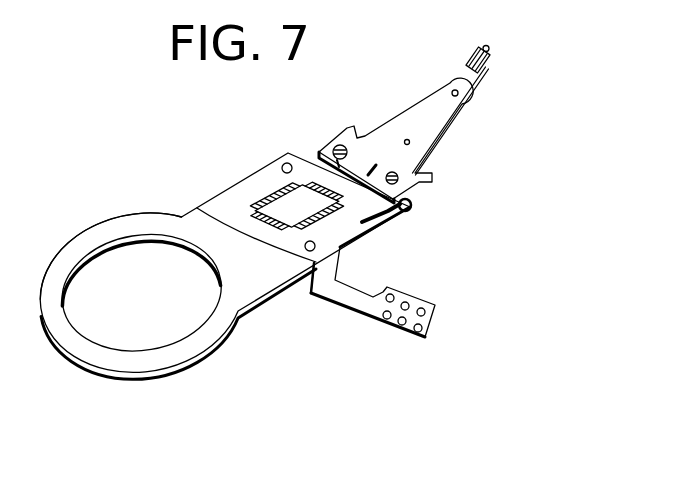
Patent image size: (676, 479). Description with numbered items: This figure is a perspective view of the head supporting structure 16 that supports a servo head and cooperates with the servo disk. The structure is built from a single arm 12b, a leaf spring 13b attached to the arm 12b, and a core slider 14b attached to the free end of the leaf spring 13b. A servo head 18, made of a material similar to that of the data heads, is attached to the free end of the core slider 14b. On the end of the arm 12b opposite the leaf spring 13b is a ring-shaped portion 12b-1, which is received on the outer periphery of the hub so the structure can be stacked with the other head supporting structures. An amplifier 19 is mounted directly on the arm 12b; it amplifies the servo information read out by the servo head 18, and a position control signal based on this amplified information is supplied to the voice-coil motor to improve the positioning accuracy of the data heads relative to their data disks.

The arm 12b is at (286, 283).
The ring-shaped portion 12b-1 is at (150, 364).
The leaf spring 13b is at (433, 127).
The core slider 14b is at (490, 70).
The head supporting structure 16 is at (153, 203).
The servo head 18 is at (491, 44).
The amplifier 19 is at (304, 209).